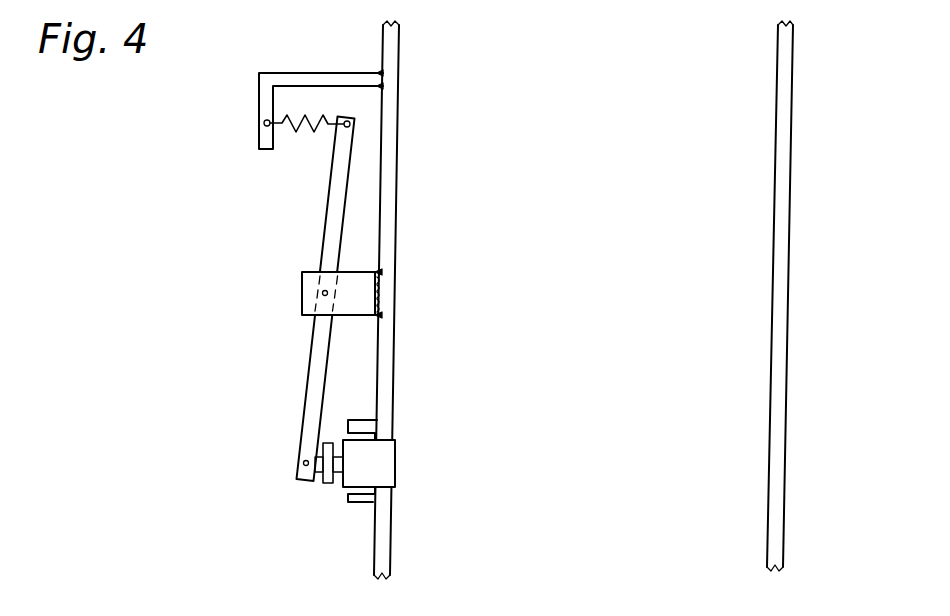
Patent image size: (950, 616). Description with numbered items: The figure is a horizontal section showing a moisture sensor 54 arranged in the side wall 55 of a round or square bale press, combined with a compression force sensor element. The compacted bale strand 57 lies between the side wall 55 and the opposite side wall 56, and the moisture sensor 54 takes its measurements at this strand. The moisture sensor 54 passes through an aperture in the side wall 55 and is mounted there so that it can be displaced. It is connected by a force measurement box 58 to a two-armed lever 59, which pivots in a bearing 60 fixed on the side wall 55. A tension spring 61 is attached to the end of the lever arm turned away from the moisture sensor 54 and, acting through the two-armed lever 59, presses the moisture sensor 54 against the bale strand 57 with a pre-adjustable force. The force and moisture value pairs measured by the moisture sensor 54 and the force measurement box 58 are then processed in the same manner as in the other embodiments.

The moisture sensor 54 is at (379, 461).
The side wall 55 is at (392, 50).
The side wall 56 is at (787, 52).
The bale strand 57 is at (576, 210).
The force measurement box 58 is at (328, 475).
The two-armed lever 59 is at (305, 373).
The bearing 60 is at (323, 294).
The tension spring 61 is at (313, 128).